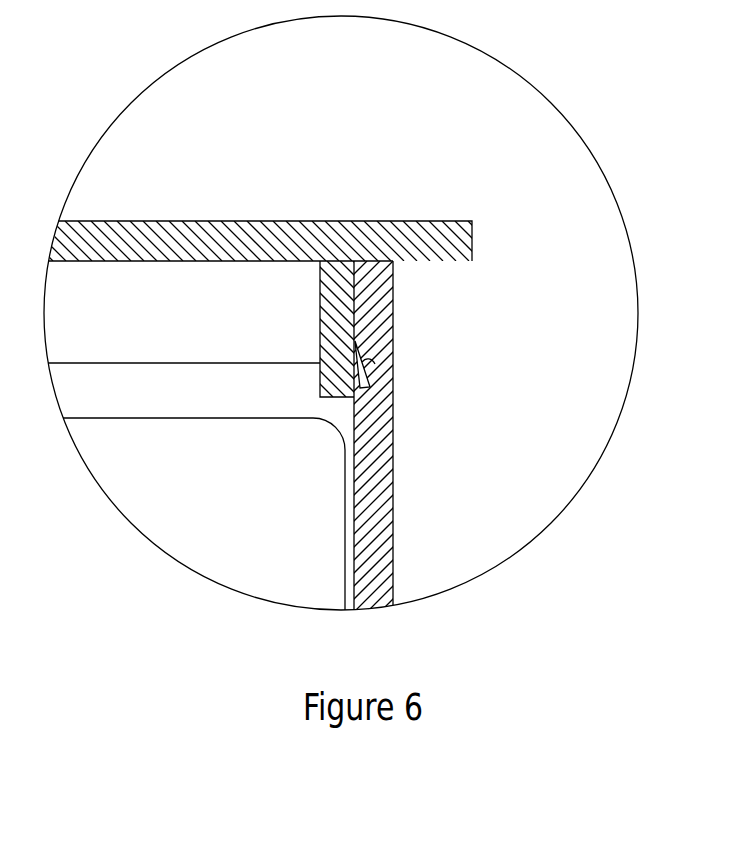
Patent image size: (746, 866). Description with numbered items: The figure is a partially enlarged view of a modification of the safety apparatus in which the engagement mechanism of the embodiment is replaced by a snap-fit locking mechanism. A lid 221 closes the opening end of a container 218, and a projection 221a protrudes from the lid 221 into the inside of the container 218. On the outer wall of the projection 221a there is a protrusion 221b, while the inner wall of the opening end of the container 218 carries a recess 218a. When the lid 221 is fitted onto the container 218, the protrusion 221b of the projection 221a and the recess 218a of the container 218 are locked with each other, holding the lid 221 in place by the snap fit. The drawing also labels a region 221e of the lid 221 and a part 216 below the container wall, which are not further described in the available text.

The lid 221 is at (470, 220).
The lower surface of cover plate 221e is at (160, 318).
The projection 221a is at (351, 297).
The protrusion 221b is at (352, 377).
The container 218 is at (374, 462).
The recess 218a is at (362, 362).
The housing body 216 is at (302, 557).